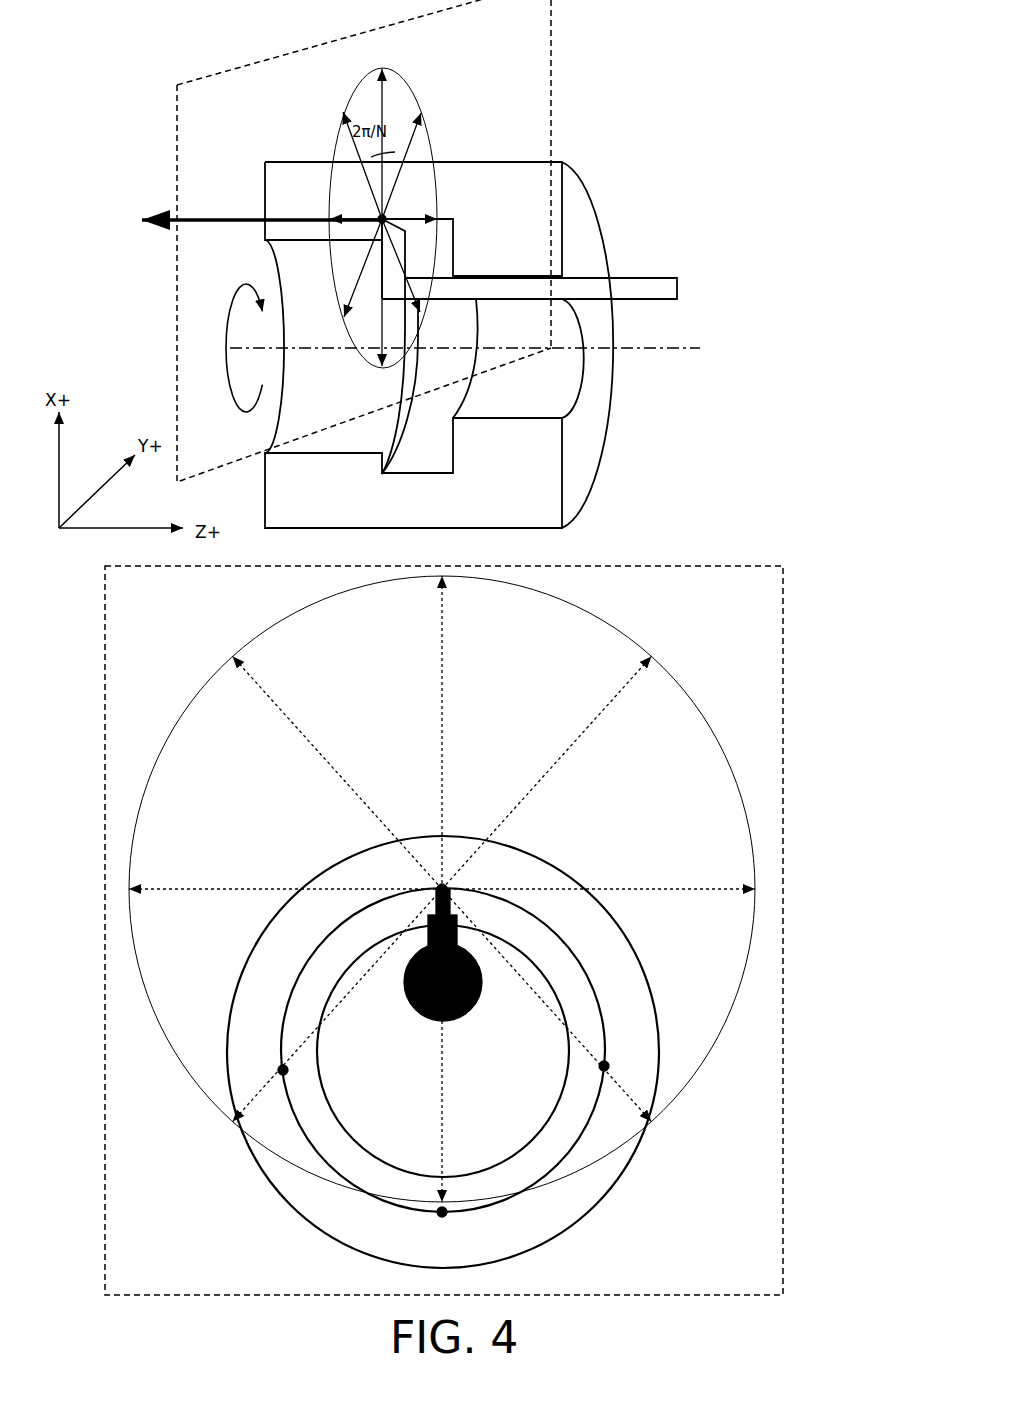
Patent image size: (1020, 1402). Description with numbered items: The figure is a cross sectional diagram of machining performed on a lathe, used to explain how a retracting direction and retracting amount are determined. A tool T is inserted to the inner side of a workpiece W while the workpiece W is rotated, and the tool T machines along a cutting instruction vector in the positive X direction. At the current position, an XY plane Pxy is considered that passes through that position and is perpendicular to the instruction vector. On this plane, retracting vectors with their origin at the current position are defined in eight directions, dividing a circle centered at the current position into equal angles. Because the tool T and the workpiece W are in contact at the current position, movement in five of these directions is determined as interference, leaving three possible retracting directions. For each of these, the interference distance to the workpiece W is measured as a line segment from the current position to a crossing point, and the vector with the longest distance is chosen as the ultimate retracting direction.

The XY plane Pxy is at (551, 15).
The workpiece W is at (605, 462).
The tool T is at (647, 300).